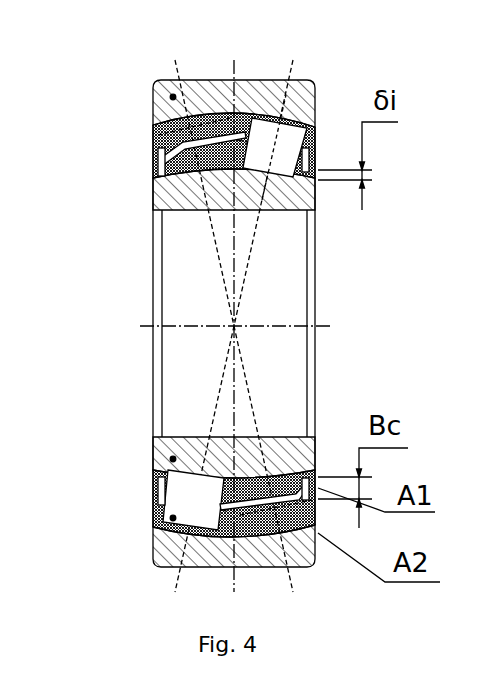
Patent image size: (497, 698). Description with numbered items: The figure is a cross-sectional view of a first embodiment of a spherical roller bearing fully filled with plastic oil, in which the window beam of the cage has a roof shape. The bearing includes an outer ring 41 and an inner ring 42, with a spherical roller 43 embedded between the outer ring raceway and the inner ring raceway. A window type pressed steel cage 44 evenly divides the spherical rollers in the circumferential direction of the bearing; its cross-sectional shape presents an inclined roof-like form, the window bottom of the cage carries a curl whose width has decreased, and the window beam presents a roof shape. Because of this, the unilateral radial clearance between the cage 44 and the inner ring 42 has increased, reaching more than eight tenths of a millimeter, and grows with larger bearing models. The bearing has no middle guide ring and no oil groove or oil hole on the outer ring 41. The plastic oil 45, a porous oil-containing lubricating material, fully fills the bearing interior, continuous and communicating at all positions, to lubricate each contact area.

The bearing outer ring 41 is at (173, 97).
The bearing inner ring 42 is at (173, 459).
The spherical roller 43 is at (173, 518).
The window type pressed steel cage 44 is at (153, 122).
The plastic oil 45 is at (153, 185).